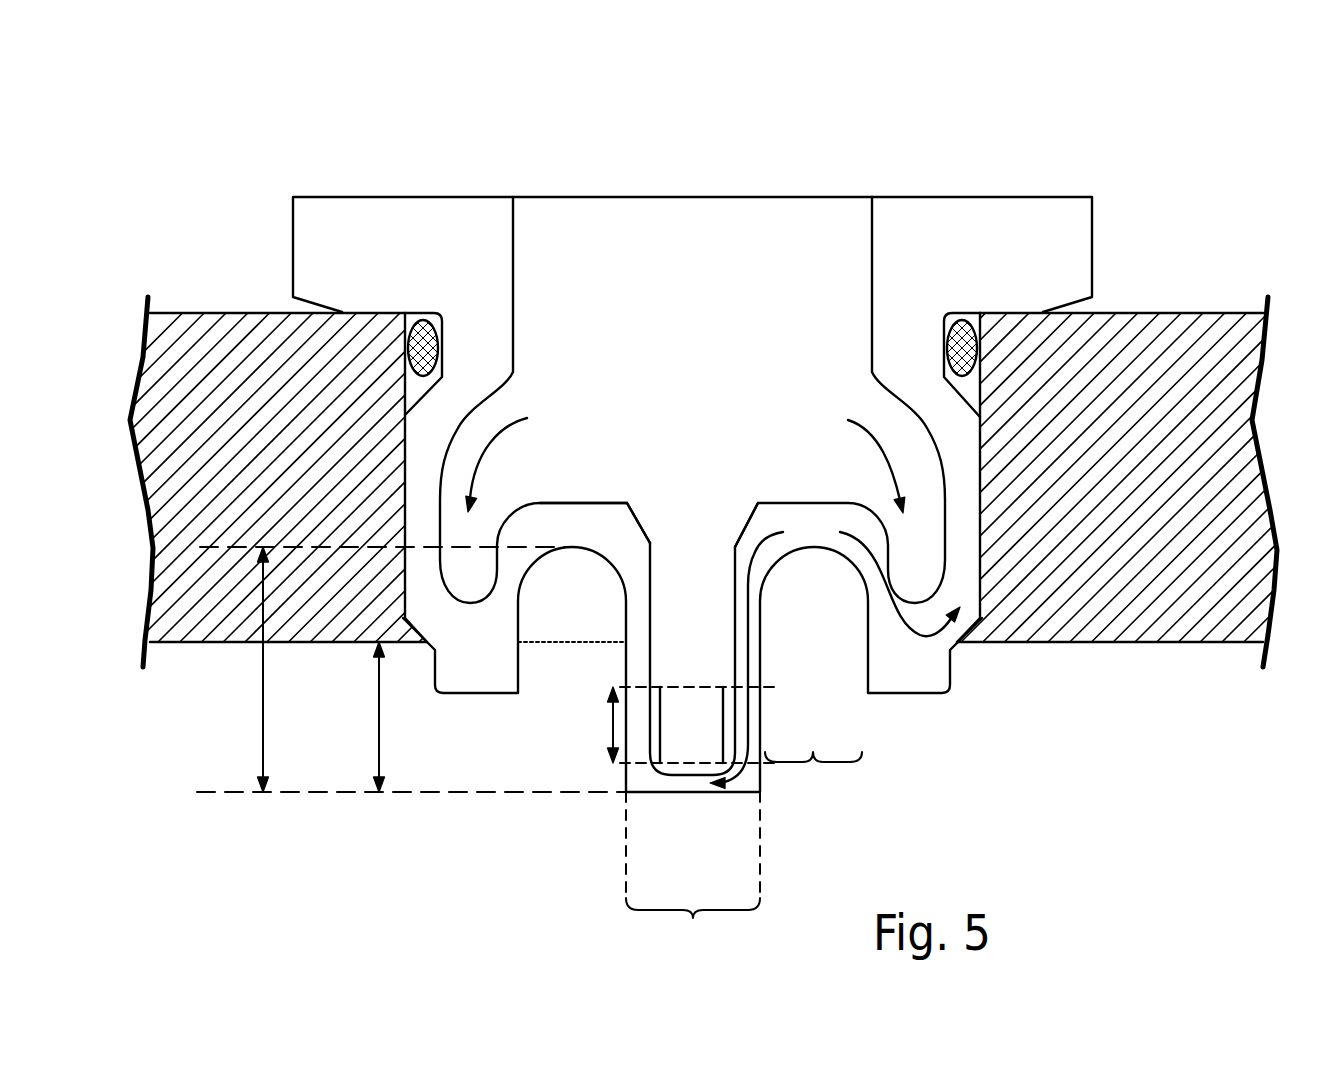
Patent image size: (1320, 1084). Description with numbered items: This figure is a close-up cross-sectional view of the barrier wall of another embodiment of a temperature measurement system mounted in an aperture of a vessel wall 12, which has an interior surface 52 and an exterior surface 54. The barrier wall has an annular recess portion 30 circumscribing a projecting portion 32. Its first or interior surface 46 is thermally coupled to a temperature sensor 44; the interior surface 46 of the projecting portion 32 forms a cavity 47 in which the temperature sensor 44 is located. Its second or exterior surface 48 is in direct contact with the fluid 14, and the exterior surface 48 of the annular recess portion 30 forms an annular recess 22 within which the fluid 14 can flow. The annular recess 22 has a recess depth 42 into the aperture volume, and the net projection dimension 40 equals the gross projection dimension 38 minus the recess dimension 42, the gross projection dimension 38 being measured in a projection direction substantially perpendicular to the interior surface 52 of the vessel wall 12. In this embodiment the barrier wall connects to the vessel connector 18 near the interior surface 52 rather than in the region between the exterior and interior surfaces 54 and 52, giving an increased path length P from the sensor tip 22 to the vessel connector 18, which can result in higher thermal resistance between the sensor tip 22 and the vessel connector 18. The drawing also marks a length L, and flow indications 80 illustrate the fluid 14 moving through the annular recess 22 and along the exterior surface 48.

The vessel wall 12 is at (977, 468).
The fluid 14 is at (1087, 813).
The vessel connector 18 is at (400, 467).
The annular recess 22 is at (582, 663).
The annular recess portion 30 is at (813, 771).
The projecting portion 32 is at (693, 918).
The gross projection dimension 38 is at (263, 707).
The net projection dimension 40 is at (379, 722).
The recess depth 42 is at (573, 547).
The temperature sensor 44 is at (693, 713).
The interior surface 46 is at (581, 502).
The cavity 47 is at (687, 604).
The exterior surface 48 is at (820, 552).
The interior surface of vessel wall 52 is at (1108, 647).
The exterior surface of vessel wall 54 is at (1160, 313).
The flow path 80 is at (685, 454).
The path length P is at (814, 528).
The length L is at (612, 731).